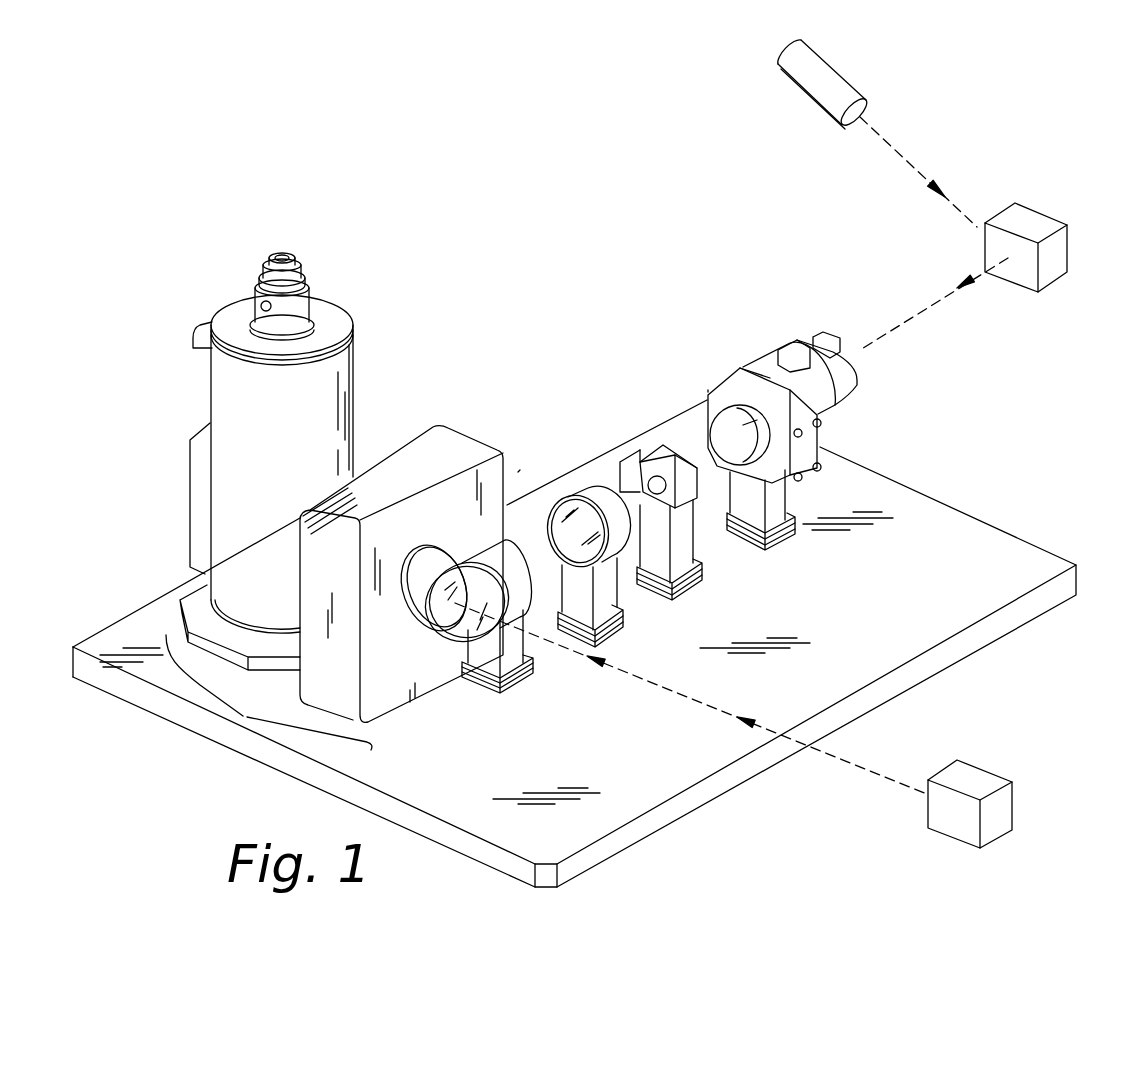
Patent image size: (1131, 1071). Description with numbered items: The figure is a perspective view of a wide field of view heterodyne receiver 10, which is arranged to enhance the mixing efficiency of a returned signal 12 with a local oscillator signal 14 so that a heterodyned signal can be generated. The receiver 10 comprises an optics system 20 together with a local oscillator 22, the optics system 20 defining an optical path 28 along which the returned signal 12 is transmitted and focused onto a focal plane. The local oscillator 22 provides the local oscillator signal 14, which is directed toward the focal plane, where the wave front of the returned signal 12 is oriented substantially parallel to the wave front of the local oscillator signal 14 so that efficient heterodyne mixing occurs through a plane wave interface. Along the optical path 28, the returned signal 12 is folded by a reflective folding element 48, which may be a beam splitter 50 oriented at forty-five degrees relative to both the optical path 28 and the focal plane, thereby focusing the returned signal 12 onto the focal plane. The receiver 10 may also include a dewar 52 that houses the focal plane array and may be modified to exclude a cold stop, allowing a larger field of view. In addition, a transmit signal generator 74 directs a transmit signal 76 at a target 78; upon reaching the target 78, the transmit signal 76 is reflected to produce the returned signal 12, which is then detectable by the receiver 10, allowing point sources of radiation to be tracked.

The wide field of view heterodyne receiver 10 is at (530, 190).
The returned signal 12 is at (900, 323).
The local oscillator signal 14 is at (890, 778).
The optics system 20 is at (817, 317).
The optical path 28 is at (678, 354).
The local oscillator 22 is at (958, 823).
The reflective folding element 48 is at (452, 630).
The beam splitter 50 is at (493, 681).
The dewar 52 is at (243, 716).
The transmit signal generator 74 is at (800, 80).
The transmit signal 76 is at (921, 174).
The target 78 is at (1057, 273).